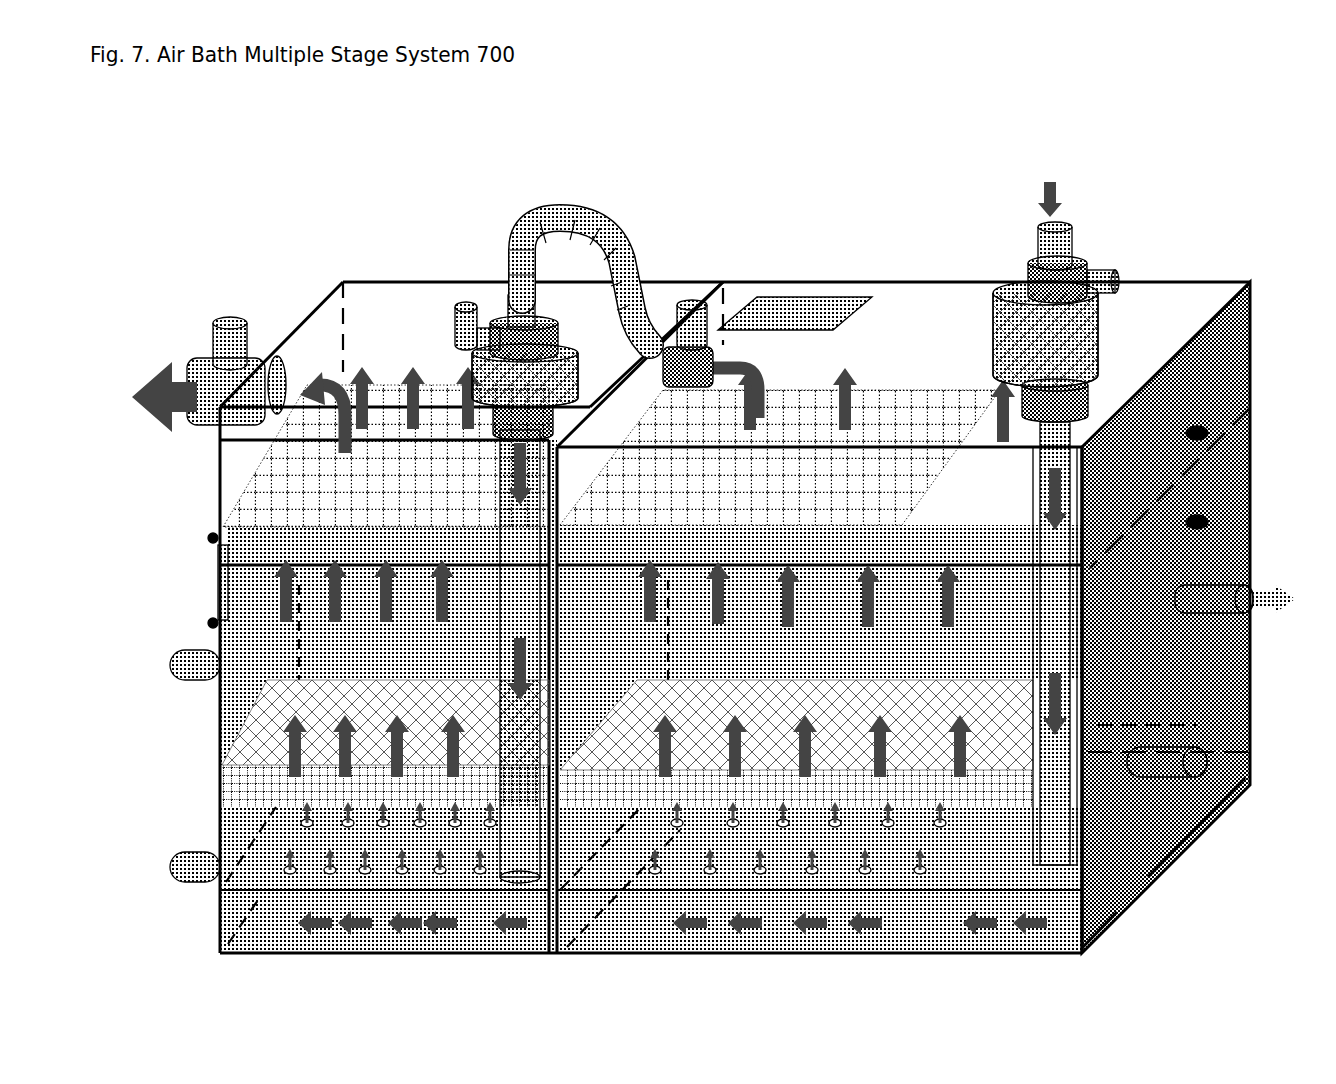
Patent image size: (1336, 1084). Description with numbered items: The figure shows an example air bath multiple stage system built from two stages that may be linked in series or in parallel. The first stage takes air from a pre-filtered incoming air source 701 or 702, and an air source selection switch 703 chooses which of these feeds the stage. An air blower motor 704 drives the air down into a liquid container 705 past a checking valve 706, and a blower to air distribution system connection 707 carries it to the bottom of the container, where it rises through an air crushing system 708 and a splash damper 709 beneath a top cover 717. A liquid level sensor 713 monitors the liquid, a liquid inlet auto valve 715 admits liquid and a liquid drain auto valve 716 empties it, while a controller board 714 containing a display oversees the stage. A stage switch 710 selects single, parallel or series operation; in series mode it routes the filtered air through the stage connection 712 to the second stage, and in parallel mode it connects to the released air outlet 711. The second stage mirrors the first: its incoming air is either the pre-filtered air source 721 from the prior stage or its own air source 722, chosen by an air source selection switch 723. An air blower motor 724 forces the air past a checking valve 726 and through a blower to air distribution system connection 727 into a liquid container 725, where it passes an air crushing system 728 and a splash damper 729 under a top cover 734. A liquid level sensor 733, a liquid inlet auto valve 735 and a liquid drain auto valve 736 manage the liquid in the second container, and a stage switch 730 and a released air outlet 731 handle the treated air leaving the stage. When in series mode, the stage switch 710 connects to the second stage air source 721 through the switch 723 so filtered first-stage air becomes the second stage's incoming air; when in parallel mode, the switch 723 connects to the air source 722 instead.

The pre-filtered incoming air source 701 is at (1049, 183).
The pre-filtered incoming air source 702 is at (1110, 270).
The air source selection switch 703 is at (1020, 278).
The air blower motor 704 is at (1128, 330).
The liquid container 705 is at (1197, 617).
The checking valve 706 is at (1090, 422).
The blower to air distribution system connection 707 is at (1067, 797).
The air crushing system 708 is at (950, 692).
The splash damper 709 is at (897, 435).
The stage switch 710 is at (664, 345).
The released air outlet 711 is at (703, 293).
The stage connection 712 is at (549, 222).
The liquid level sensor 713 is at (1196, 488).
The controller board 714 is at (806, 288).
The liquid inlet auto valve 715 is at (1239, 616).
The liquid drain auto valve 716 is at (1198, 801).
The top cover 717 is at (888, 278).
The pre-filtered incoming air source from prior stage 721 is at (500, 320).
The air source 722 is at (453, 307).
The air source selection switch 723 is at (498, 318).
The air blower motor 724 is at (470, 372).
The liquid container 725 is at (209, 820).
The checking valve 726 is at (500, 455).
The blower to air distribution system connection 727 is at (488, 857).
The air crushing system 728 is at (265, 737).
The splash damper 729 is at (255, 500).
The stage switch 730 is at (190, 360).
The released air outlet 731 is at (207, 320).
The liquid level sensor 733 is at (205, 585).
The top cover 734 is at (323, 313).
The liquid inlet auto valve 735 is at (158, 664).
The liquid drain auto valve 736 is at (192, 867).